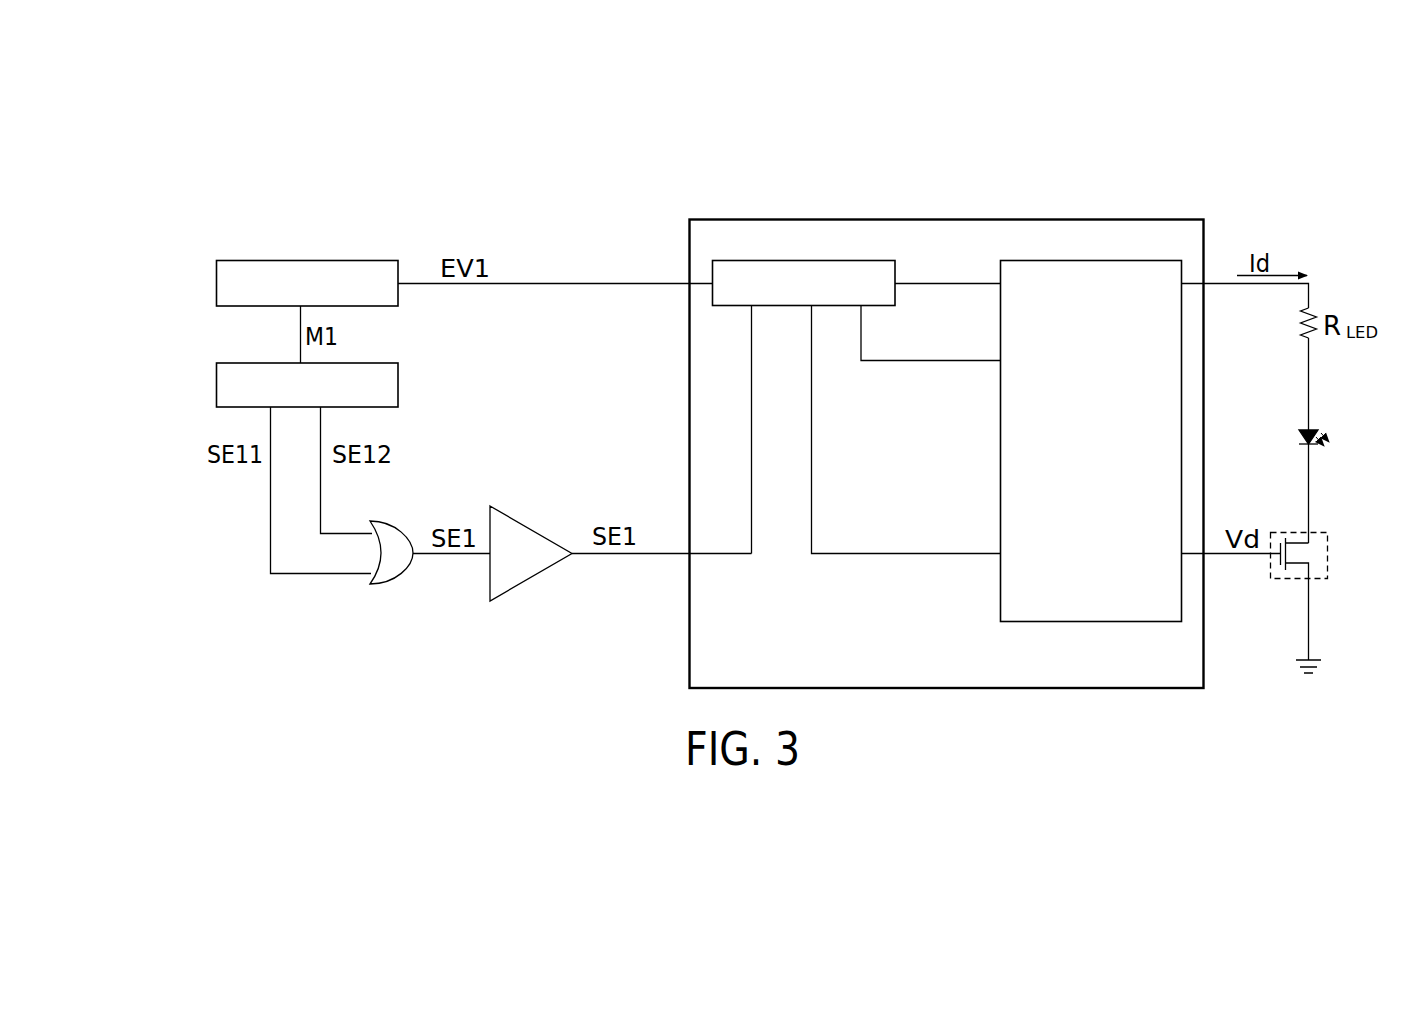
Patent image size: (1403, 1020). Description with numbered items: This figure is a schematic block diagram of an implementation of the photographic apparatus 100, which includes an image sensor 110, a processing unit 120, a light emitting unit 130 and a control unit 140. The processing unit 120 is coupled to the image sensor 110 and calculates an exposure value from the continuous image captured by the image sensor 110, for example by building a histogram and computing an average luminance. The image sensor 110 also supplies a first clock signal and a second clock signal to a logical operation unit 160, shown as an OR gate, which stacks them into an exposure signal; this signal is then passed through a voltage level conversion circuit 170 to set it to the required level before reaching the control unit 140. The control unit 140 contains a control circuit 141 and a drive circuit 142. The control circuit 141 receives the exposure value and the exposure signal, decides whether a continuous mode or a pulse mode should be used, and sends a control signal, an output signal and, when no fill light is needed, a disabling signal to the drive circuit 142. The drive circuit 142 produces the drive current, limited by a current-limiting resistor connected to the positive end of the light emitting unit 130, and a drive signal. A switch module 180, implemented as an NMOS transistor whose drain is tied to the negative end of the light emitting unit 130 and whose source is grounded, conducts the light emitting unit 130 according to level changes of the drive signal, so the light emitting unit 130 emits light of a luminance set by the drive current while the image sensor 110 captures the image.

The photographic apparatus 100 is at (186, 162).
The image sensor 110 is at (216, 383).
The processing unit 120 is at (216, 281).
The light emitting unit 130 is at (1319, 431).
The control unit 140 is at (1166, 218).
The control circuit 141 is at (757, 258).
The drive circuit 142 is at (1051, 258).
The logical operation unit 160 is at (389, 586).
The voltage level conversion circuit 170 is at (525, 580).
The switch module 180 is at (1328, 545).